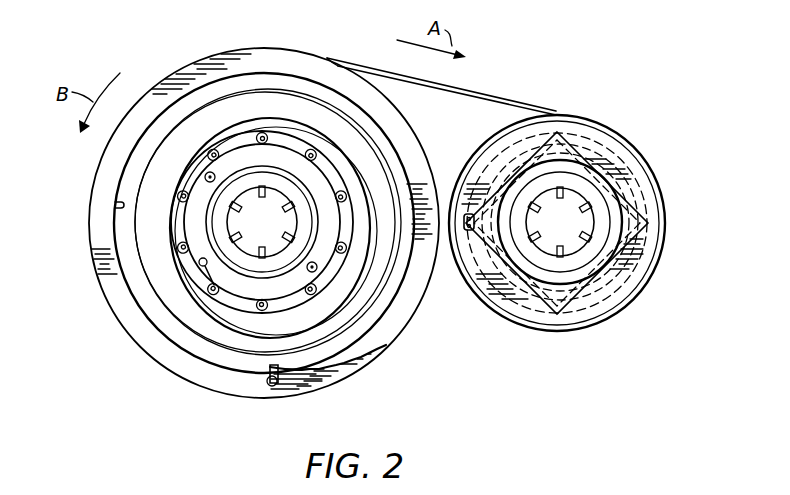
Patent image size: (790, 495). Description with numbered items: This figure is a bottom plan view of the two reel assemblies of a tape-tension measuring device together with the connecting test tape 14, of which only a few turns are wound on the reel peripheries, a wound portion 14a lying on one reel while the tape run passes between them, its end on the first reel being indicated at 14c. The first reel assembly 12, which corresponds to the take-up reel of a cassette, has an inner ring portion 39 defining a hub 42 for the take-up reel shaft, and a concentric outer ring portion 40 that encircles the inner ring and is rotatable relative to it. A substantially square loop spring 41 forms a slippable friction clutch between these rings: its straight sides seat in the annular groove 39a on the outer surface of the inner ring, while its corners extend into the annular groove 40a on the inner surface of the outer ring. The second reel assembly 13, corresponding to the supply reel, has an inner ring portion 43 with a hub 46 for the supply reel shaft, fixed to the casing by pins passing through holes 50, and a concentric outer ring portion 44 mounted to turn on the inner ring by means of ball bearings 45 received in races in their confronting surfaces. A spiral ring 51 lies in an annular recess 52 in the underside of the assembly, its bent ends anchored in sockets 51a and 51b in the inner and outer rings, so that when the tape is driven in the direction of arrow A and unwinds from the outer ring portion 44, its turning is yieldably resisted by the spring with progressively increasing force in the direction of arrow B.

The first reel assembly 12 is at (511, 335).
The second reel assembly 13 is at (158, 379).
The test tape 14 is at (511, 96).
The wound portion of test tape 14a is at (656, 283).
The belt end 14c is at (352, 65).
The inner ring portion 39 is at (587, 173).
The annular groove 39a is at (655, 210).
The outer ring portion 40 is at (641, 172).
The annular groove 40a is at (650, 245).
The loop spring 41 is at (580, 298).
The hub 42 is at (542, 248).
The inner ring portion 43 is at (336, 343).
The outer ring portion 44 is at (221, 387).
The ball bearings 45 is at (258, 134).
The hub 46 is at (228, 224).
The holes 50 is at (215, 176).
The spiral ring 51 is at (140, 250).
The socket 51a is at (204, 267).
The socket 51b is at (273, 390).
The annular recess 52 is at (115, 205).